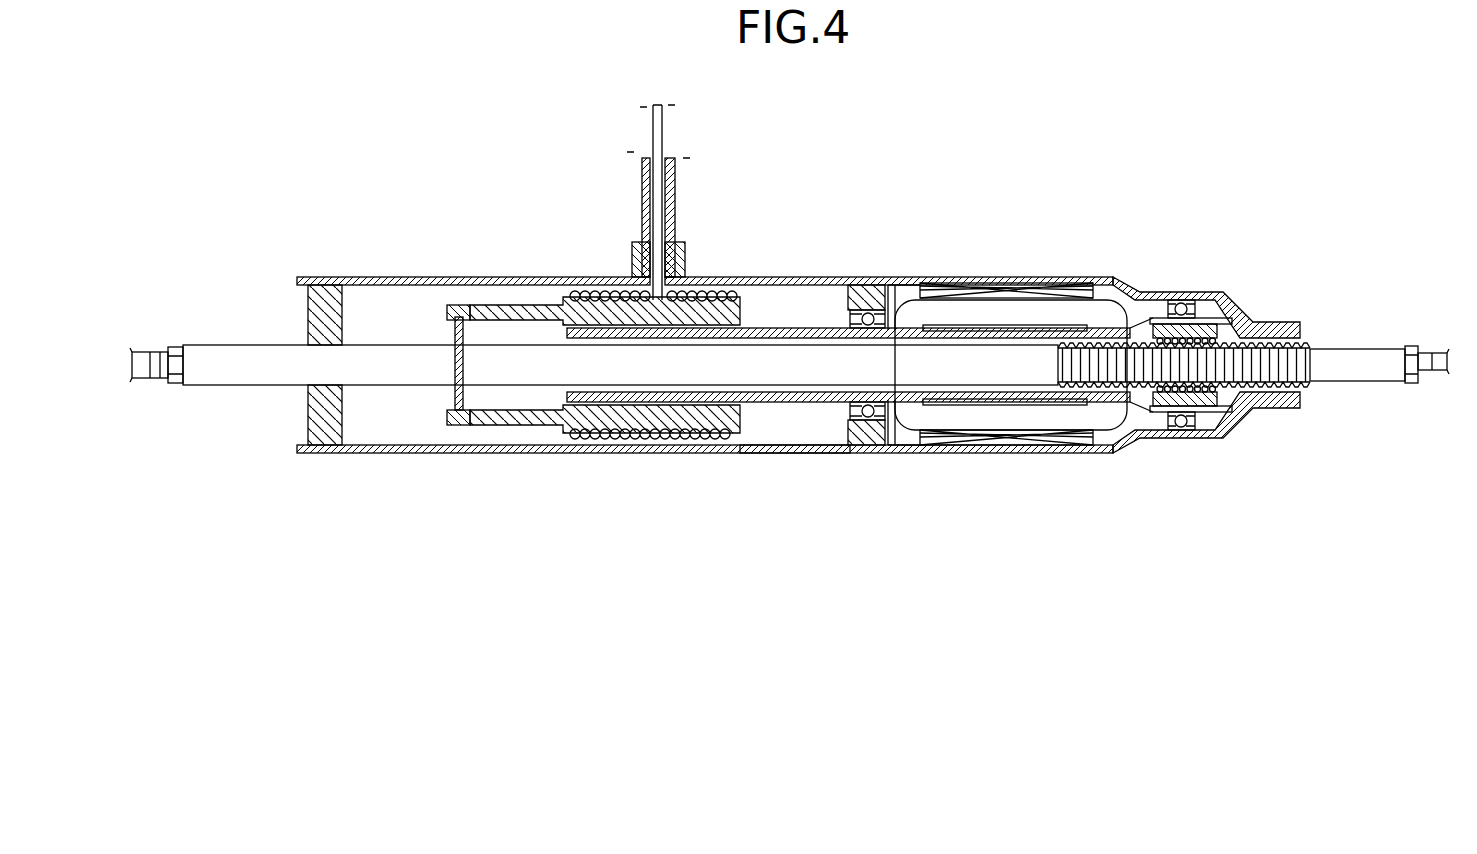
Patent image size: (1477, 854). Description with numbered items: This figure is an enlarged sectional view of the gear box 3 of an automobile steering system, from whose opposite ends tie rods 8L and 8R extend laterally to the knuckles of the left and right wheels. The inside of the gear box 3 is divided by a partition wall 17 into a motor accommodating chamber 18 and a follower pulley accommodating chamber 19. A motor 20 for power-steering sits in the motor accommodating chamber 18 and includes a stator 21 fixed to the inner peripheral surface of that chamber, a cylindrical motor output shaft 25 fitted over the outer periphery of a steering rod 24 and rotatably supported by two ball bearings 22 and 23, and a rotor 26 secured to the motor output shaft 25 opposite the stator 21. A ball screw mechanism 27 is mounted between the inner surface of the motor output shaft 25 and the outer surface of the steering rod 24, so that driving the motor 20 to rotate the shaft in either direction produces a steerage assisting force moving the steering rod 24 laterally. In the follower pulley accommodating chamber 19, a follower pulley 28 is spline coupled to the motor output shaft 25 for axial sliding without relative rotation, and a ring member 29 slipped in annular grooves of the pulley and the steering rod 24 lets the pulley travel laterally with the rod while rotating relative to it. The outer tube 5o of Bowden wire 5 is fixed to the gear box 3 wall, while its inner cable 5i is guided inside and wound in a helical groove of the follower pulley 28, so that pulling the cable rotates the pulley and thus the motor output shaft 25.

The gear box 3 is at (443, 277).
The first Bowden wire 5 is at (526, 202).
The inner cable 5i is at (653, 128).
The outer tube 5o is at (642, 207).
The tie rod 8R is at (148, 354).
The tie rod 8L is at (1436, 358).
The partition wall 17 is at (868, 433).
The motor accommodating chamber 18 is at (1112, 438).
The follower pulley accommodating chamber 19 is at (760, 430).
The motor 20 is at (1122, 289).
The stator 21 is at (1002, 440).
The ball bearing 22 is at (1181, 298).
The ball bearing 23 is at (875, 285).
The steering rod 24 is at (820, 372).
The motor output shaft 25 is at (782, 330).
The rotor 26 is at (1010, 315).
The ball screw mechanism 27 is at (1222, 386).
The follower pulley 28 is at (673, 417).
The ring member 29 is at (455, 393).